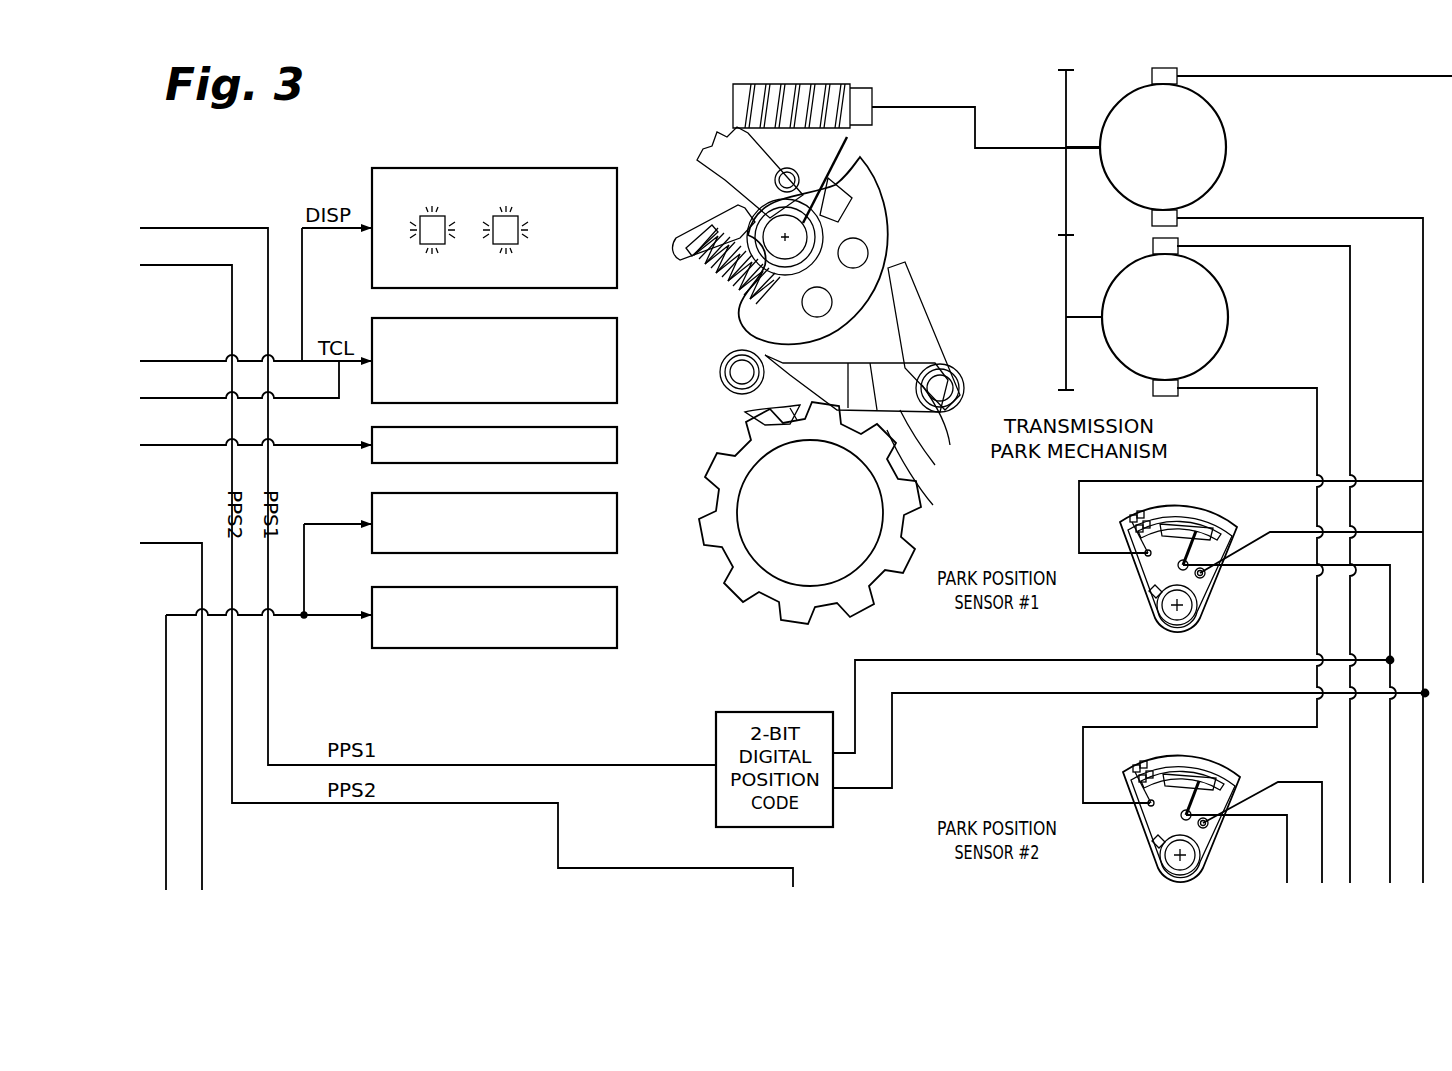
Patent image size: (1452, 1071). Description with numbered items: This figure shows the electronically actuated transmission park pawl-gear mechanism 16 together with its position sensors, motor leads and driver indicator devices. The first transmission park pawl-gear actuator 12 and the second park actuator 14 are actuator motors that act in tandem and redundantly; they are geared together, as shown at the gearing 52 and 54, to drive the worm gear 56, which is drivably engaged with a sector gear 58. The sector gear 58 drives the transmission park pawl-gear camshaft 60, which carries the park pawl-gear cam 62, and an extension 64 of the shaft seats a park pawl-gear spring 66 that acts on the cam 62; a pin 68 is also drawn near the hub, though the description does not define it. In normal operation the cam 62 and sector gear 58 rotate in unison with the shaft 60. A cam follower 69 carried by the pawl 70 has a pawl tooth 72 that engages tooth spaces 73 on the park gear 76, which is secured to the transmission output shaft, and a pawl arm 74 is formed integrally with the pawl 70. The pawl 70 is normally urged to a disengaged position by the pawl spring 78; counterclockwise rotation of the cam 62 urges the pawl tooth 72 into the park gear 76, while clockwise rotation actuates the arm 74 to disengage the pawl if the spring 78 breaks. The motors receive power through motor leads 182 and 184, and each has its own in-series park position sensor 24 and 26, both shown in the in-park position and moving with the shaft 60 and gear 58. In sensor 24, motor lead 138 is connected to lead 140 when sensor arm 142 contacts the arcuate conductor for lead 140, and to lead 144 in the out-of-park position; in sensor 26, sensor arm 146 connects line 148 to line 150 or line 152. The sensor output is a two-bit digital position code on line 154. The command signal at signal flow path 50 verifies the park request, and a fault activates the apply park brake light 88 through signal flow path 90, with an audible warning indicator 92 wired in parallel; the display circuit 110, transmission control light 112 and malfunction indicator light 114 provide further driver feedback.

The first transmission park pawl-gear actuator 12 is at (1236, 143).
The second park actuator 14 is at (1238, 320).
The transmission park pawl-gear mechanism 16 is at (895, 212).
The park position sensor 24 is at (1214, 610).
The park position sensor 26 is at (1146, 863).
The signal flow path 50 is at (203, 856).
The motor gearing 52 is at (1066, 95).
The motor gearing 54 is at (1066, 336).
The worm gear 56 is at (858, 86).
The sector gear 58 is at (718, 157).
The transmission park pawl-gear camshaft 60 is at (778, 235).
The park pawl-gear cam 62 is at (884, 196).
The extension of the shaft 64 is at (715, 200).
The park pawl-gear spring 66 is at (720, 292).
The pin 68 is at (775, 172).
The cam follower 69 is at (740, 393).
The pawl 70 is at (853, 363).
The pawl tooth 72 is at (762, 432).
The tooth spaces 73 is at (922, 494).
The pawl arm 74 is at (912, 310).
The park gear 76 is at (757, 588).
The pawl spring 78 is at (905, 455).
The apply park brake light 88 is at (372, 600).
The signal flow path 90 is at (176, 614).
The audible warning indicator 92 is at (372, 538).
The display circuit 110 is at (372, 170).
The transmission control light 112 is at (372, 320).
The malfunction indicator light 114 is at (372, 428).
The motor lead 138 is at (1210, 481).
The lead 140 is at (1297, 574).
The sensor arm 142 is at (1150, 576).
The lead 144 is at (1283, 545).
The sensor arm 146 is at (1152, 818).
The line 148 is at (1297, 728).
The line 150 is at (1276, 822).
The line 152 is at (1280, 790).
The line 154 is at (672, 766).
The motor lead 182 is at (1350, 348).
The motor lead 184 is at (1451, 178).